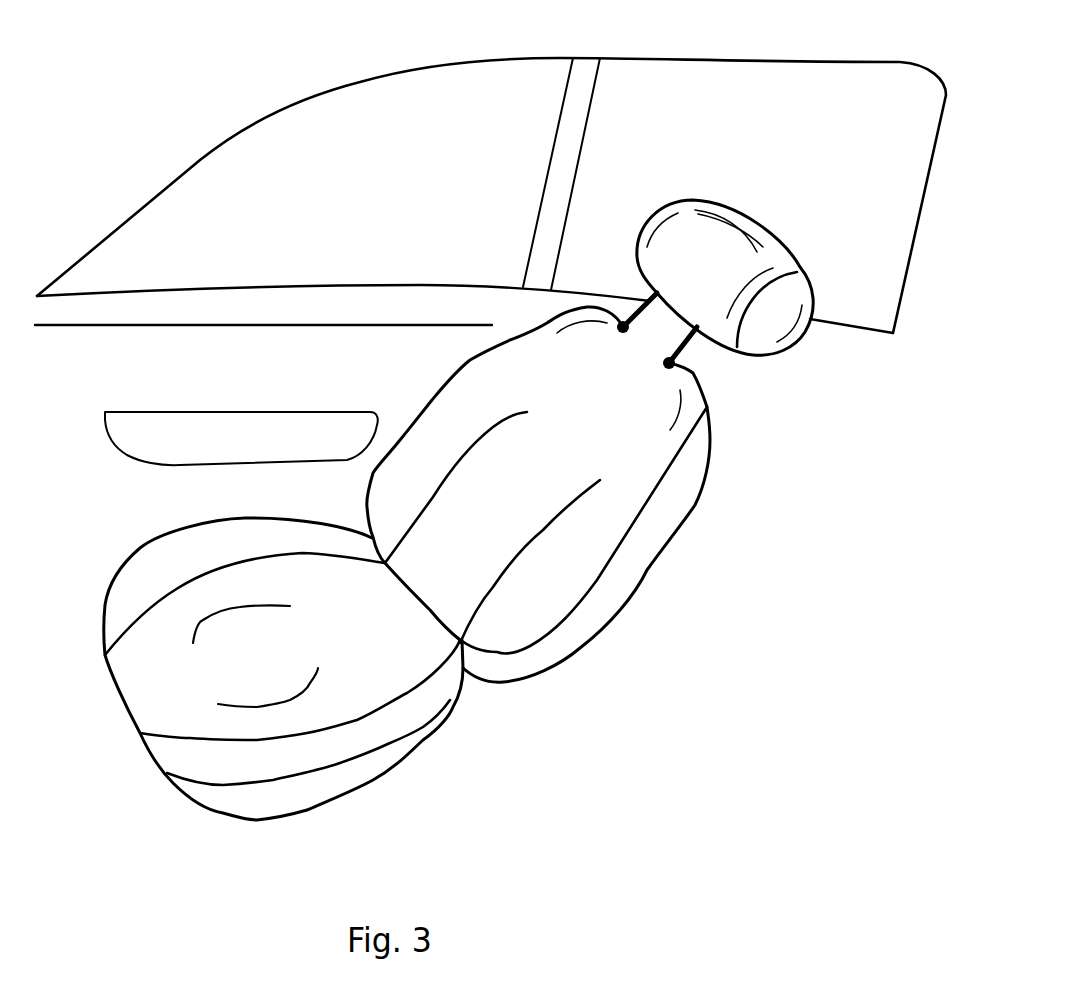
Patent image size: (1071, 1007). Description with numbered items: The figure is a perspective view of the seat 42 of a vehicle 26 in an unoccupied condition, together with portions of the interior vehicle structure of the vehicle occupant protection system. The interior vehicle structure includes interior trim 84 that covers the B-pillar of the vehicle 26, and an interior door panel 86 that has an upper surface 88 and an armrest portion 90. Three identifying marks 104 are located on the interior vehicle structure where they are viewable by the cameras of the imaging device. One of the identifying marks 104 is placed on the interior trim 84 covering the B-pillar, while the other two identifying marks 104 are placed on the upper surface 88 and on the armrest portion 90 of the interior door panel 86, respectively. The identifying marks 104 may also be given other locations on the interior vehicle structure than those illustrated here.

The vehicle 26 is at (586, 57).
The seat 42 is at (712, 512).
The interior trim 84 is at (588, 112).
The interior door panel 86 is at (320, 330).
The upper surface 88 is at (373, 307).
The armrest portion 90 is at (170, 434).
The identifying marks 104 is at (542, 149).